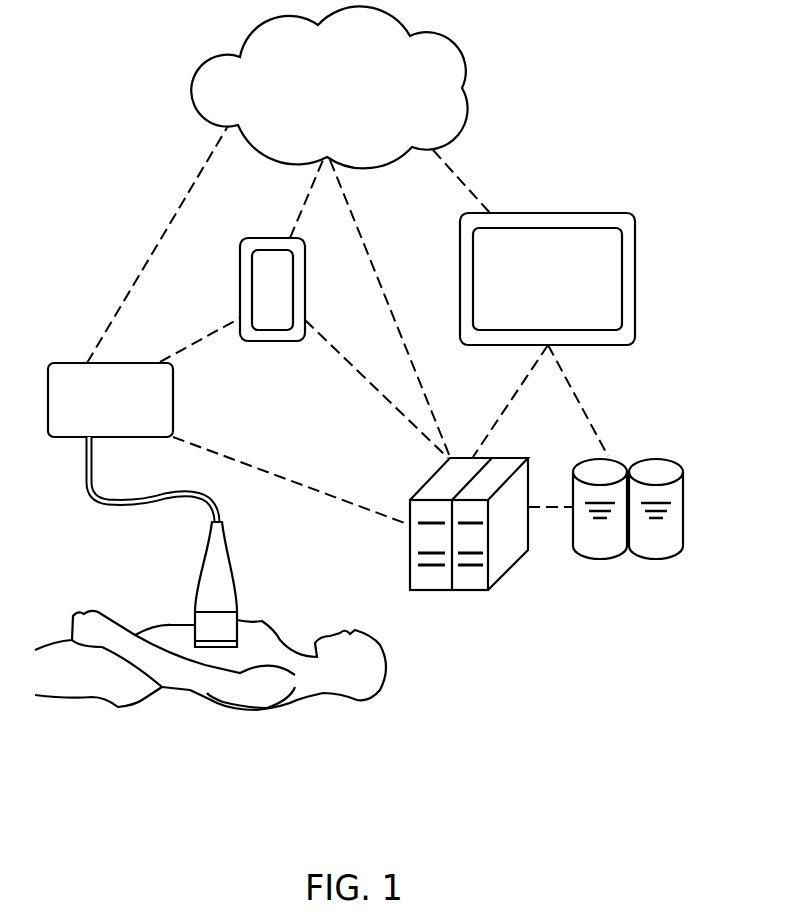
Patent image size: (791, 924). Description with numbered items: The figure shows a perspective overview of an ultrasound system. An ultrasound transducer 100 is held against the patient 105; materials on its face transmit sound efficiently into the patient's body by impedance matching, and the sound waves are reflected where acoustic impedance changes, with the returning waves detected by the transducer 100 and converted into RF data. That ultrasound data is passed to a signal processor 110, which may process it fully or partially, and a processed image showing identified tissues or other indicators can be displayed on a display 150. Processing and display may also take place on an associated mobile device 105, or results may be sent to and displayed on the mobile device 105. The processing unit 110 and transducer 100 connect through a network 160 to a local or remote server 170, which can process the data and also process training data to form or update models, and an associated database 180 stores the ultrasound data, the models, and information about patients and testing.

The ultrasound transducer 100 is at (163, 542).
The mobile device / patient 105 is at (210, 492).
The signal processor 110 is at (110, 400).
The display 150 is at (547, 279).
The network 160 is at (329, 87).
The server 170 is at (469, 541).
The database 180 is at (628, 542).